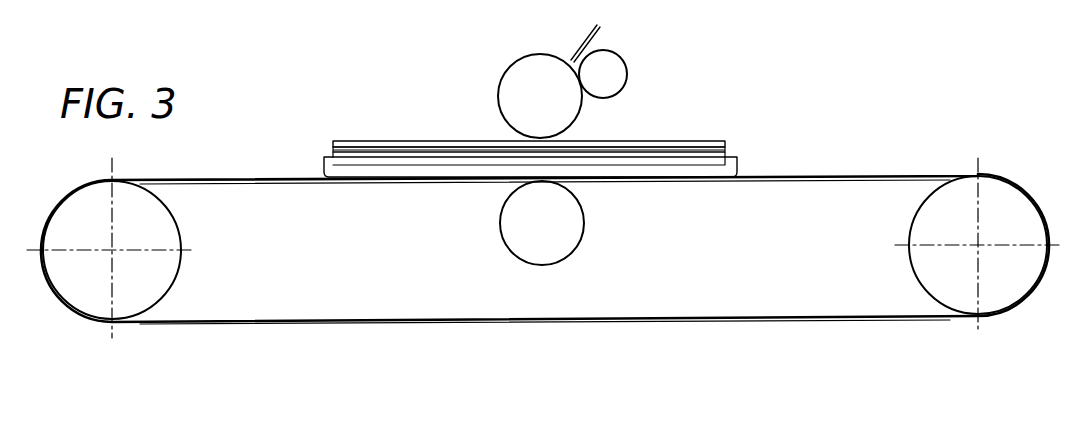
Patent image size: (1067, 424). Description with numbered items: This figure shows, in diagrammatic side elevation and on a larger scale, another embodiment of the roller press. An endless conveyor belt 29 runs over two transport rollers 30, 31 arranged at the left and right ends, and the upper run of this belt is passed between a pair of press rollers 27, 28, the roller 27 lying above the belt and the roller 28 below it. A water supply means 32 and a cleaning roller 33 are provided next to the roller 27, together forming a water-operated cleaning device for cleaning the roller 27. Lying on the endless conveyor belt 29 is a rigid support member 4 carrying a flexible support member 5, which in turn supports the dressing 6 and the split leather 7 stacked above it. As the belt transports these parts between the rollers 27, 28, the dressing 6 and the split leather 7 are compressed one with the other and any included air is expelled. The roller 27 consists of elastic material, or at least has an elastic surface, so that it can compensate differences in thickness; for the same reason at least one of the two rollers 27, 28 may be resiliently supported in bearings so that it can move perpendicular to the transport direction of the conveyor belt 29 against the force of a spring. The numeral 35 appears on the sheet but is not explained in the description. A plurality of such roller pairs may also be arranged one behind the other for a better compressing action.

The rigid support member 4 is at (707, 168).
The flexible support member 5 is at (652, 161).
The dressing 6 is at (727, 150).
The split leather 7 is at (698, 141).
The roller 27 is at (514, 87).
The roller 28 is at (514, 231).
The endless conveyor belt 29 is at (860, 177).
The transport roller 30 is at (137, 292).
The transport roller 31 is at (1005, 287).
The water supply means 32 is at (598, 42).
The cleaning roller 33 is at (613, 75).
The sheet numeral 35 is at (766, 411).